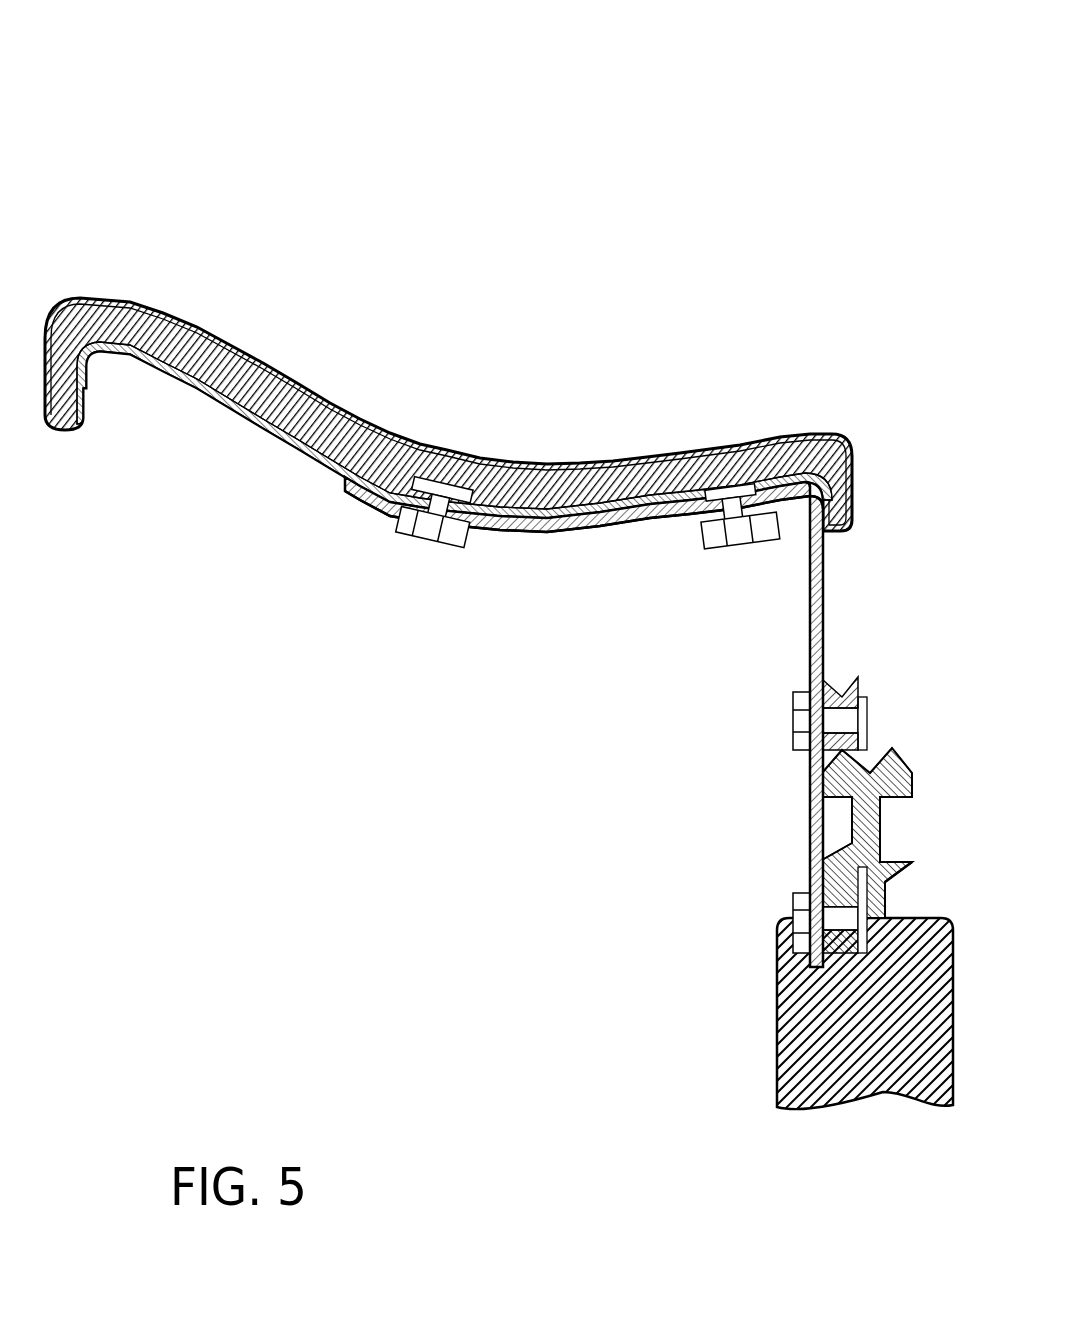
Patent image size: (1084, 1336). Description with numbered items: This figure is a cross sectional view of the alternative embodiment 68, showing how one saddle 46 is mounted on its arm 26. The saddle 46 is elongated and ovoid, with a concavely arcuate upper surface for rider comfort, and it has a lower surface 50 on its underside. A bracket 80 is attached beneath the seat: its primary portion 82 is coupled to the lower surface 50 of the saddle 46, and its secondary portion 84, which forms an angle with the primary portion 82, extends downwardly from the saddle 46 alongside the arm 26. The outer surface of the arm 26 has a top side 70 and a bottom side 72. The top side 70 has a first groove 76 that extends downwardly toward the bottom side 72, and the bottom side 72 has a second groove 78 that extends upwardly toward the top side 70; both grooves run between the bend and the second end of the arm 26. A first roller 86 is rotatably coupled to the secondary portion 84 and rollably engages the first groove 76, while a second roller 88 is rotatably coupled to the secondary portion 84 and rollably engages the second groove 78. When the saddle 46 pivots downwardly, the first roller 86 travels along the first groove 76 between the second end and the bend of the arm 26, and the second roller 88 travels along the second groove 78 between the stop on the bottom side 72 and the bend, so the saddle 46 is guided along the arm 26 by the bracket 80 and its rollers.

The alternative embodiment 68 is at (472, 511).
The saddle 46 is at (459, 444).
The lower surface 50 is at (542, 525).
The bracket 80 is at (847, 507).
The primary portion 82 is at (604, 555).
The secondary portion 84 is at (780, 776).
The first roller 86 is at (827, 687).
The first groove 76 is at (871, 745).
The top side 70 is at (897, 753).
The arm 26 is at (945, 752).
The bottom side 72 is at (888, 889).
The second roller 88 is at (822, 942).
The second groove 78 is at (867, 900).